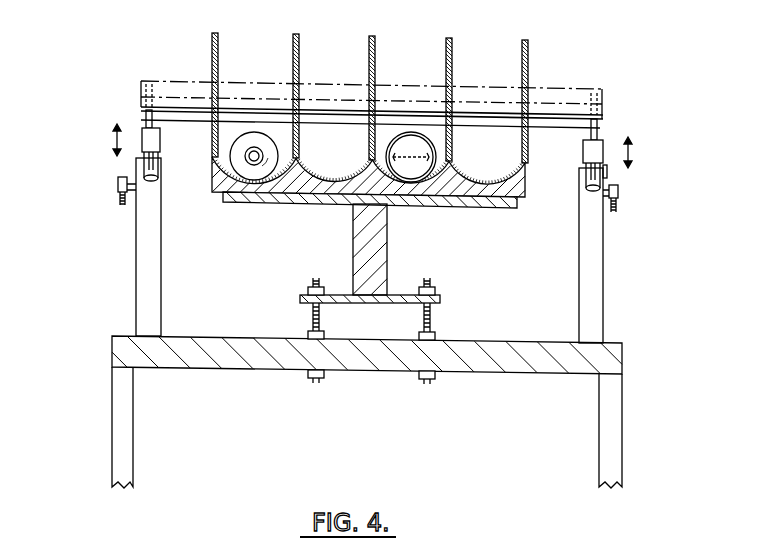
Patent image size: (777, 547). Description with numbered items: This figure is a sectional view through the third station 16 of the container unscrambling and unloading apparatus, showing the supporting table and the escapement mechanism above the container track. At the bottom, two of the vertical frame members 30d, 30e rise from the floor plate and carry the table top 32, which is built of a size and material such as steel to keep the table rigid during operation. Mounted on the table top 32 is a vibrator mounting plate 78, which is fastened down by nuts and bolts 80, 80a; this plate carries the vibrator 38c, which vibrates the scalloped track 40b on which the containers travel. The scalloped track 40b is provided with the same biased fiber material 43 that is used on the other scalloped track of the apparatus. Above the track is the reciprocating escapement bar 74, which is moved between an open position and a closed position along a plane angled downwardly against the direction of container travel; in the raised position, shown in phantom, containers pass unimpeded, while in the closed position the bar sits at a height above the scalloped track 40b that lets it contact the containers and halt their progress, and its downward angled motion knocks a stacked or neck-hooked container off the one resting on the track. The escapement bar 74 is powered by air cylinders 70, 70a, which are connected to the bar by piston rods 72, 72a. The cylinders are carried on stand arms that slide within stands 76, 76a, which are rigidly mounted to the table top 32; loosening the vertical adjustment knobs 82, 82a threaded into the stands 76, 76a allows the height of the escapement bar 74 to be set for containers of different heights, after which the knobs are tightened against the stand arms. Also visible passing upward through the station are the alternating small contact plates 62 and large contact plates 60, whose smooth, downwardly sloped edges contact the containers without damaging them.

The third station 16 is at (626, 69).
The vertical frame member 30d is at (612, 438).
The vertical frame member 30e is at (125, 437).
The table top 32 is at (389, 362).
The vibrator 38c is at (375, 251).
The scalloped track 40b is at (452, 185).
The biased fiber material 43 is at (488, 178).
The large contact plate 60 is at (299, 50).
The small contact plate 62 is at (219, 46).
The air cylinder 70 is at (590, 173).
The air cylinder 70a is at (143, 158).
The piston rod 72 is at (599, 134).
The piston rod 72a is at (148, 124).
The escapement bar 74 is at (393, 118).
The stand 76 is at (593, 284).
The stand 76a is at (144, 287).
The vibrator mounting plate 78 is at (333, 297).
The nut and bolt 80 is at (431, 318).
The nut and bolt 80a is at (310, 314).
The vertical adjustment knob 82 is at (618, 196).
The vertical adjustment knob 82a is at (118, 188).